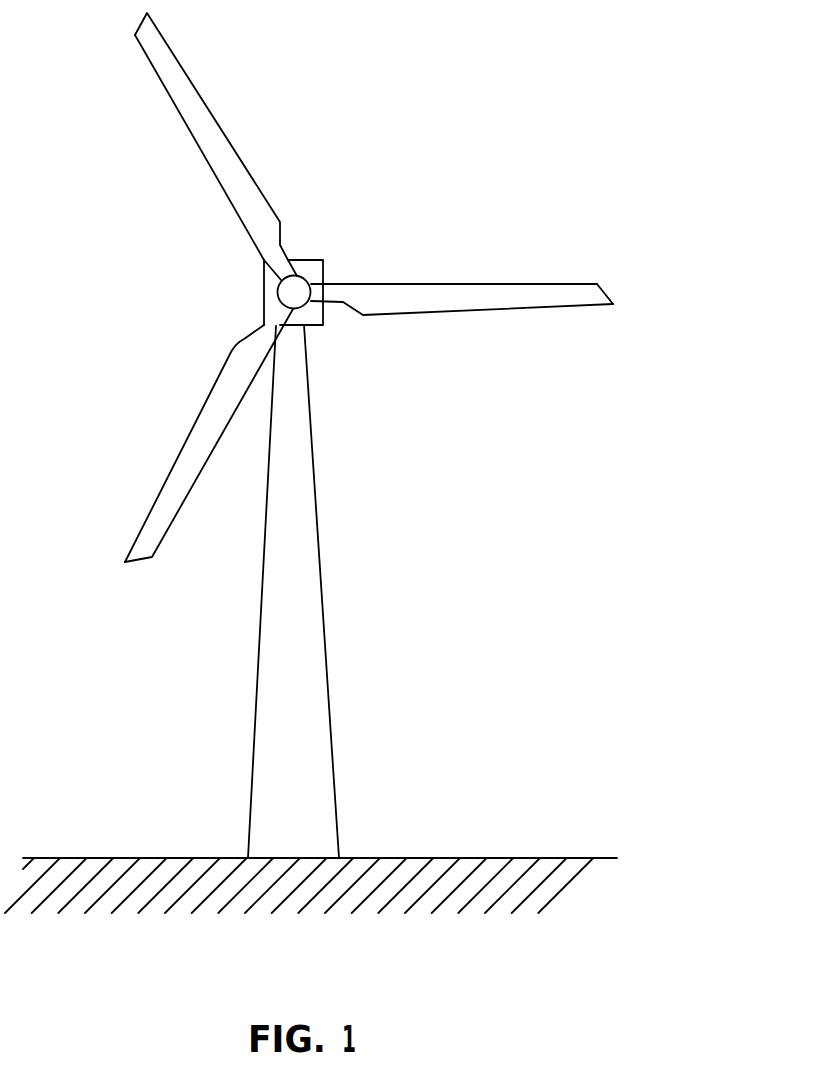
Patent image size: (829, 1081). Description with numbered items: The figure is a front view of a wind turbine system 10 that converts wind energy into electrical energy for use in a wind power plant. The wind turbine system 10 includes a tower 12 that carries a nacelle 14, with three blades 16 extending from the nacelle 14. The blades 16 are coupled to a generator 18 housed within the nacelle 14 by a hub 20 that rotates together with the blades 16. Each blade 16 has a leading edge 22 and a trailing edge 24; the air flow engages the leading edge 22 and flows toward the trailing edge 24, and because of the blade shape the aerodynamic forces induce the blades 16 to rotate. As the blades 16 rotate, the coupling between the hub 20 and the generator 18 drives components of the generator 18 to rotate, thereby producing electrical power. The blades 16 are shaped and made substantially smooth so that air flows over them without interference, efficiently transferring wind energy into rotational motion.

The wind turbine system 10 is at (406, 96).
The tower 12 is at (320, 549).
The nacelle 14 is at (305, 257).
The blades 16 is at (369, 287).
The generator 18 is at (308, 268).
The hub 20 is at (292, 294).
The leading edge 22 is at (473, 283).
The trailing edge 24 is at (520, 308).